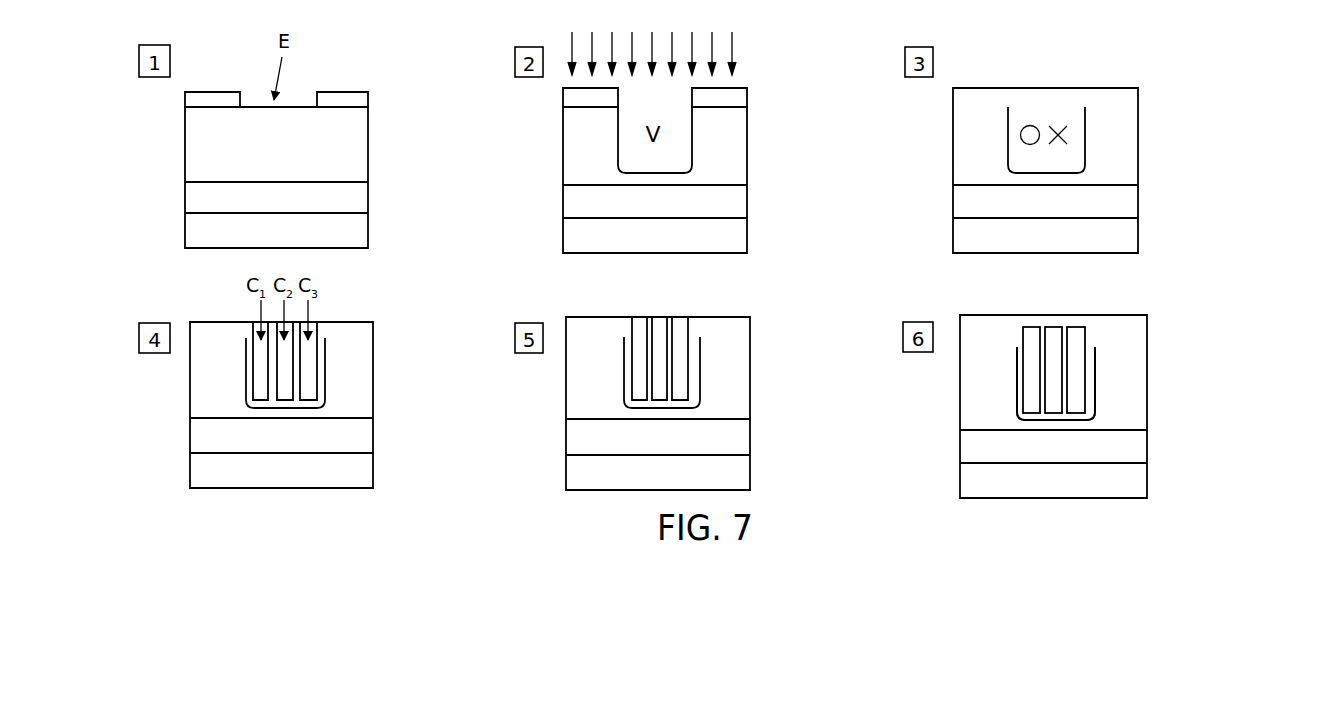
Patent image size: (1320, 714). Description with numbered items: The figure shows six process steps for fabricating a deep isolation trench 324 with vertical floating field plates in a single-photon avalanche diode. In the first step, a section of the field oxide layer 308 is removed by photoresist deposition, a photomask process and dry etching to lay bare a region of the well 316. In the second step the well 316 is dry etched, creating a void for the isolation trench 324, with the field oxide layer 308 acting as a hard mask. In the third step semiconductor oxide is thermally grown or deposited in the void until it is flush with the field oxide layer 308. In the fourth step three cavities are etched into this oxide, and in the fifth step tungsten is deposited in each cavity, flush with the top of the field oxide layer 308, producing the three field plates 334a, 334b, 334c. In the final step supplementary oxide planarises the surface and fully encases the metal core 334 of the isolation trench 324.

The field oxide layer 308 is at (342, 98).
The well 316 is at (255, 156).
The deep isolation trench 324 is at (1088, 407).
The metal core 334 is at (1015, 364).
The first field plate 334a is at (682, 327).
The second field plate 334b is at (660, 332).
The third field plate 334c is at (638, 322).